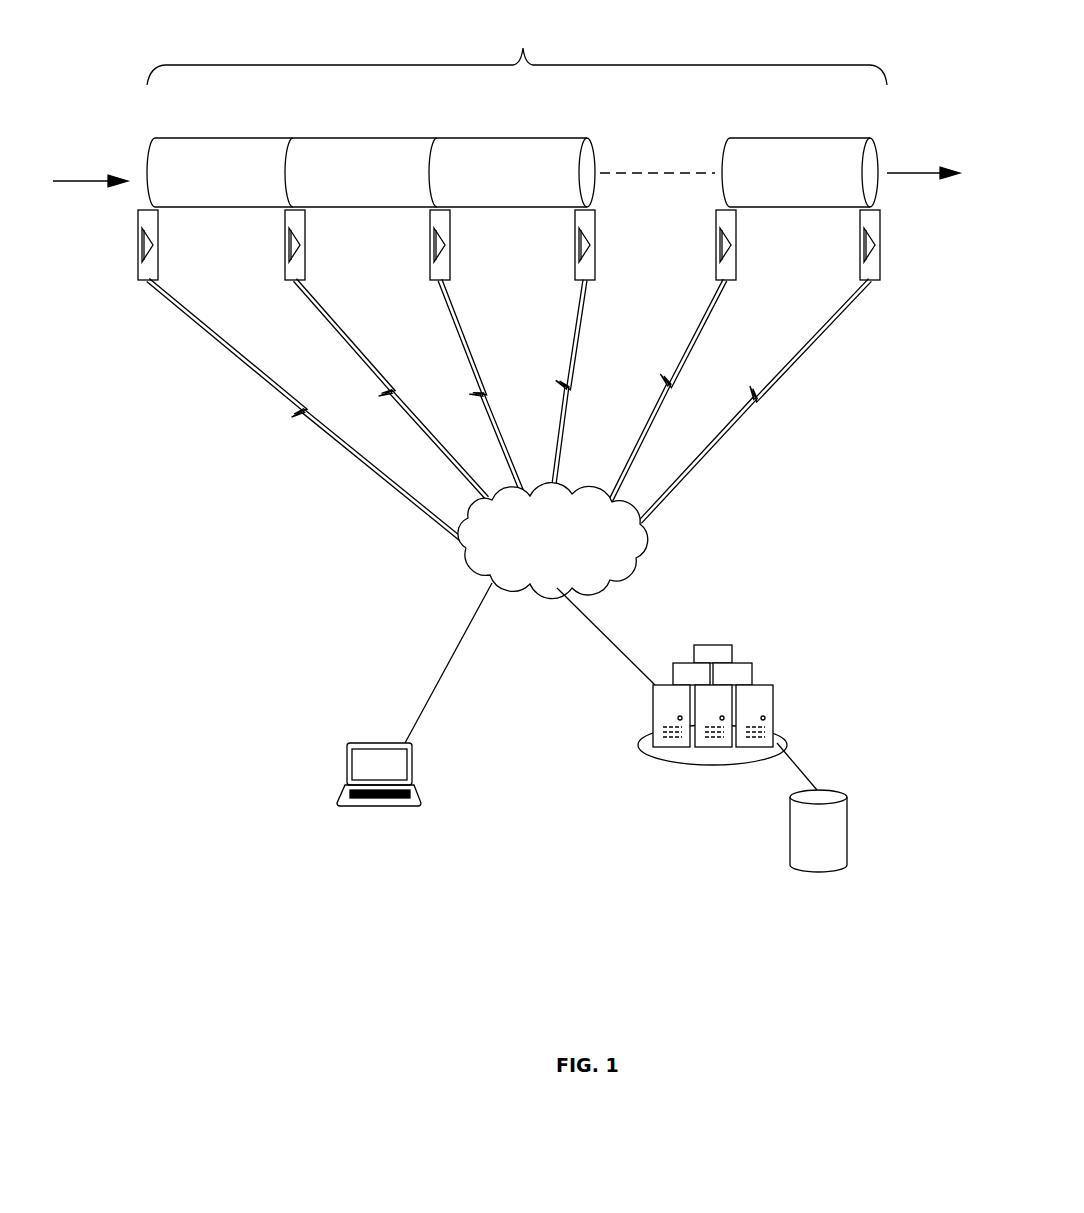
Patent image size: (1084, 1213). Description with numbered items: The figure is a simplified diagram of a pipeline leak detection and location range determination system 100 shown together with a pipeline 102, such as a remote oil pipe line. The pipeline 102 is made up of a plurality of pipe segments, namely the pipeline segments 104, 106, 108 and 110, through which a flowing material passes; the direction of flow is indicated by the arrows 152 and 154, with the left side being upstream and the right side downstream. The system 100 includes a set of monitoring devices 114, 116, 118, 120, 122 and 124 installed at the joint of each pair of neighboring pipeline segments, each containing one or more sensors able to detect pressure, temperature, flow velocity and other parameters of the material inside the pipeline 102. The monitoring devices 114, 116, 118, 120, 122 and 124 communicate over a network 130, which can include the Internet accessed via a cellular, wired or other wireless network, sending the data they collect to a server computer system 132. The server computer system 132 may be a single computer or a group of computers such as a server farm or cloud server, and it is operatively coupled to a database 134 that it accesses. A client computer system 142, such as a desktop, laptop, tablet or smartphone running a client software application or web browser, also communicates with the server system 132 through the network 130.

The pipeline leak detection and location range determination system 100 is at (235, 586).
The pipeline 102 is at (435, 65).
The pipeline segment 104 is at (238, 137).
The pipeline segment 106 is at (365, 137).
The pipeline segment 108 is at (510, 137).
The pipeline segment 110 is at (800, 137).
The monitoring device 114 is at (140, 235).
The monitoring device 116 is at (287, 235).
The monitoring device 118 is at (432, 250).
The monitoring device 120 is at (577, 250).
The monitoring device 122 is at (718, 240).
The monitoring device 124 is at (862, 240).
The network 130 is at (472, 563).
The server computer system 132 is at (667, 753).
The database 134 is at (790, 827).
The client computer system 142 is at (338, 808).
The flow direction 152 is at (85, 178).
The flow direction 154 is at (935, 172).